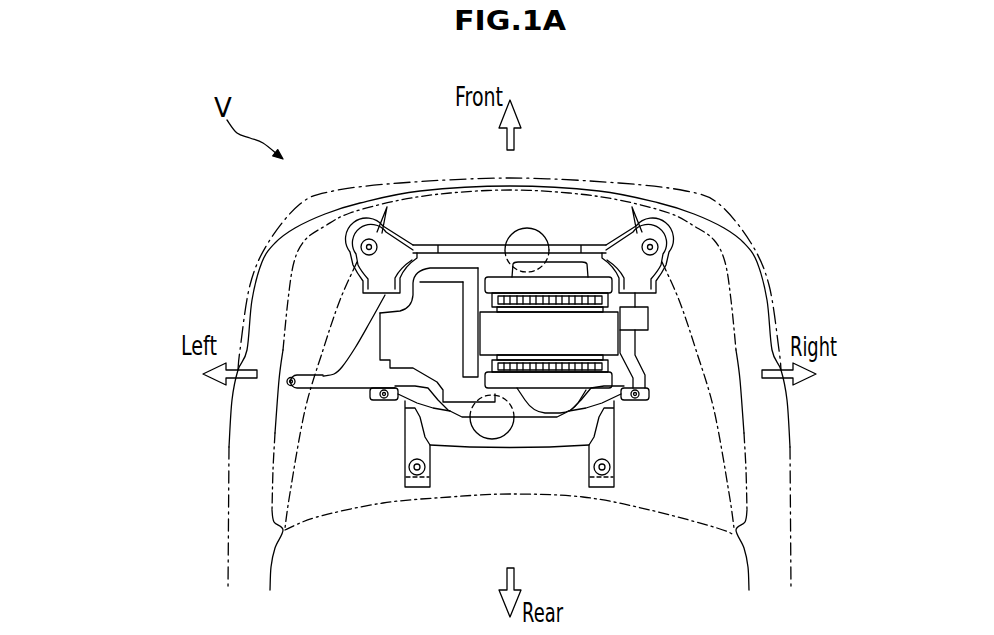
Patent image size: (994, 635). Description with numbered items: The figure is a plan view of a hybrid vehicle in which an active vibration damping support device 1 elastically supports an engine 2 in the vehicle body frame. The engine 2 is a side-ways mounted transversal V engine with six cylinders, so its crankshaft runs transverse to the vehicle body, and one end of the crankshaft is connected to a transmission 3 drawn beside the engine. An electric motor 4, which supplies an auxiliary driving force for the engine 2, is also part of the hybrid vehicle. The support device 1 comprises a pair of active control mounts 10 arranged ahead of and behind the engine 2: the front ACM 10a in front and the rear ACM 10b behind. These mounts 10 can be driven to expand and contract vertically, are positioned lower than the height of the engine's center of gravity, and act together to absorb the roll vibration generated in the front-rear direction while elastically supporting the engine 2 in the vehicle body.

The active vibration damping support device 1 is at (500, 233).
The engine 2 is at (555, 322).
The transmission 3 is at (433, 305).
The electric motor 4 is at (470, 290).
The active control mount 10 is at (559, 334).
The front ACM 10a is at (530, 238).
The rear ACM 10b is at (500, 428).